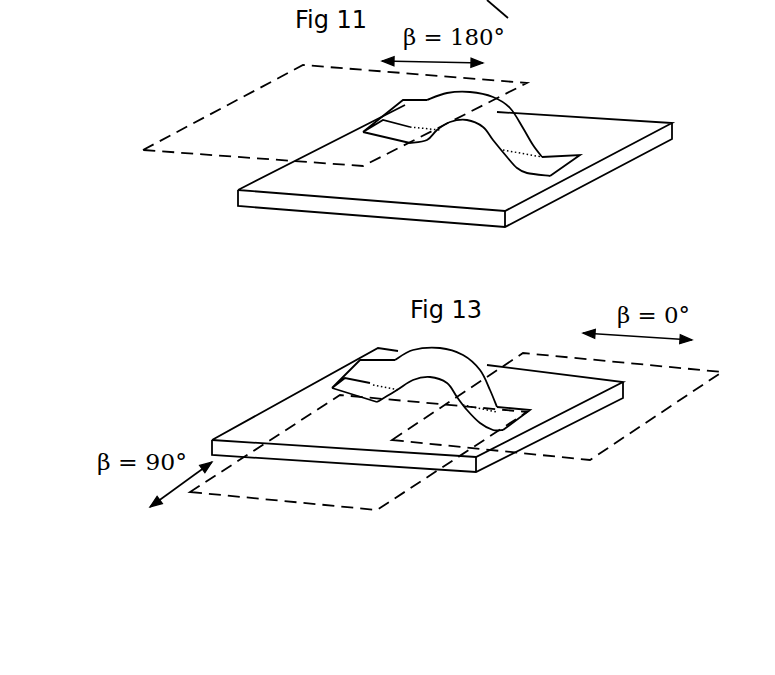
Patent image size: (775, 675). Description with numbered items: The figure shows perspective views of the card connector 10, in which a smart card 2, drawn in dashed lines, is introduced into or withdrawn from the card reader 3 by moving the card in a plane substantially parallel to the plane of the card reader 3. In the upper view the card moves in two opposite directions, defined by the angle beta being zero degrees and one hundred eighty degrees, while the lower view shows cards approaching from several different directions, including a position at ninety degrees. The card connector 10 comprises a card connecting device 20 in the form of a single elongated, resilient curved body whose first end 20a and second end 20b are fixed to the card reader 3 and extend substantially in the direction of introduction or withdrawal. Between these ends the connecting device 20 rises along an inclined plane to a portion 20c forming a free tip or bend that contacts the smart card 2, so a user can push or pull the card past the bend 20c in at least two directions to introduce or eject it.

In FIG. 11, the smart card 2 is at (238, 91).
In FIG. 13, the smart card 2 is at (407, 510).
In FIG. 11, the card reader 3 is at (480, 180).
In FIG. 13, the card reader 3 is at (362, 433).
In FIG. 11, the card connector 10 is at (479, 158).
In FIG. 13, the card connector 10 is at (417, 396).
In FIG. 11, the card connecting device 20 is at (544, 121).
In FIG. 13, the card connecting device 20 is at (430, 428).
In FIG. 13, the first end 20a is at (352, 407).
In FIG. 13, the second end 20b is at (505, 440).
In FIG. 11, the bend 20c is at (492, 90).
In FIG. 13, the bend 20c is at (492, 358).